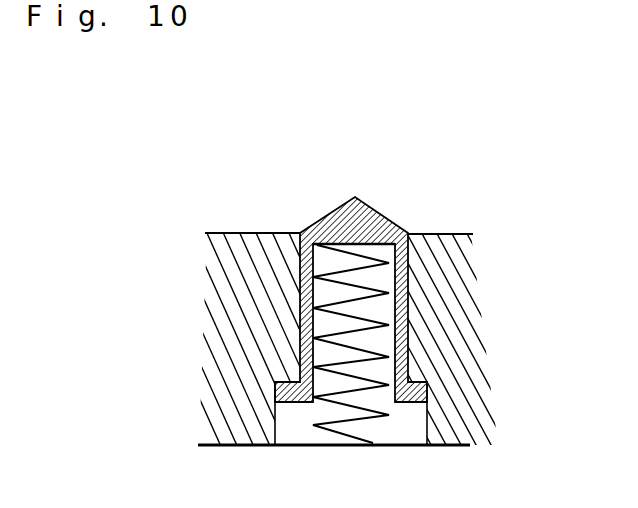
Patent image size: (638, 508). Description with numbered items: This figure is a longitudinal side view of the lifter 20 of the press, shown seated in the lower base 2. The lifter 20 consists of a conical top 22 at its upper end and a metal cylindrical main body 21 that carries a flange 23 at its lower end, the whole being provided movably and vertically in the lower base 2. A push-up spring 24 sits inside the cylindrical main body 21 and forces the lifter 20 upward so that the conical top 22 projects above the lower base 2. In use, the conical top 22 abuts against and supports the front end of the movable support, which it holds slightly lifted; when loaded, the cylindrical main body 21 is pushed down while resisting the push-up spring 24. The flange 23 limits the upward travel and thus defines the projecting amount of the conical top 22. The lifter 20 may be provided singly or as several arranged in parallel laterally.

The lower base 2 is at (250, 424).
The lifter 20 is at (408, 272).
The cylindrical main body 21 is at (409, 284).
The conical top 22 is at (381, 217).
The flange 23 is at (425, 393).
The push-up spring 24 is at (372, 420).